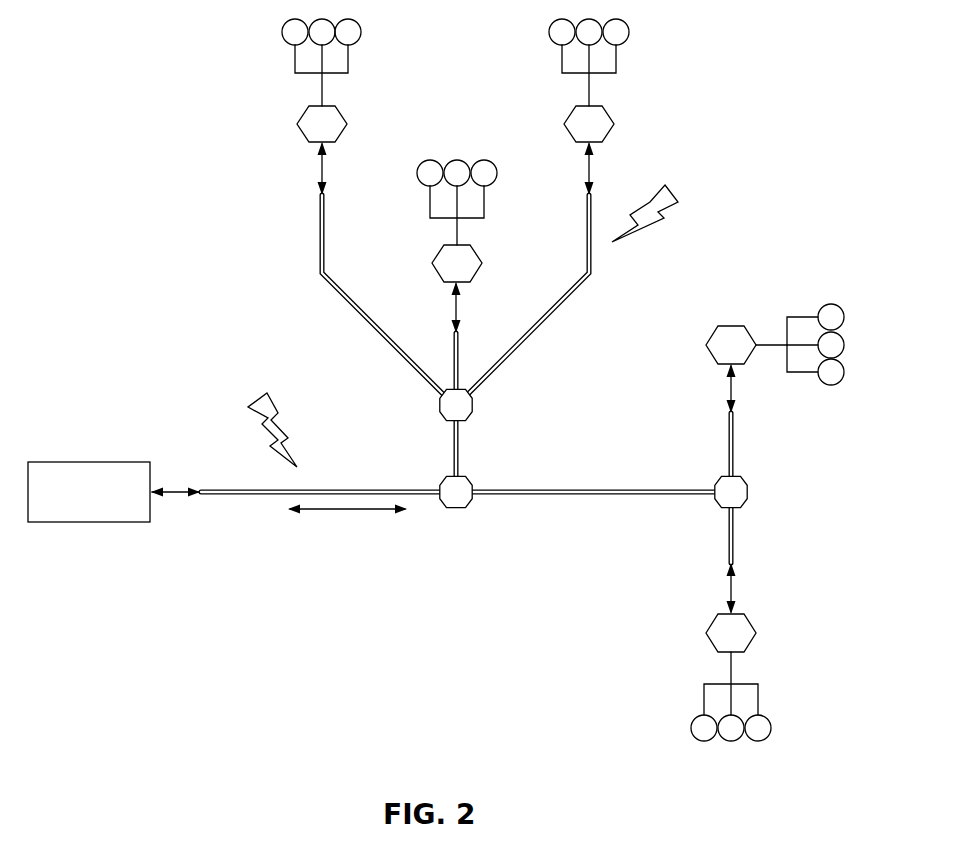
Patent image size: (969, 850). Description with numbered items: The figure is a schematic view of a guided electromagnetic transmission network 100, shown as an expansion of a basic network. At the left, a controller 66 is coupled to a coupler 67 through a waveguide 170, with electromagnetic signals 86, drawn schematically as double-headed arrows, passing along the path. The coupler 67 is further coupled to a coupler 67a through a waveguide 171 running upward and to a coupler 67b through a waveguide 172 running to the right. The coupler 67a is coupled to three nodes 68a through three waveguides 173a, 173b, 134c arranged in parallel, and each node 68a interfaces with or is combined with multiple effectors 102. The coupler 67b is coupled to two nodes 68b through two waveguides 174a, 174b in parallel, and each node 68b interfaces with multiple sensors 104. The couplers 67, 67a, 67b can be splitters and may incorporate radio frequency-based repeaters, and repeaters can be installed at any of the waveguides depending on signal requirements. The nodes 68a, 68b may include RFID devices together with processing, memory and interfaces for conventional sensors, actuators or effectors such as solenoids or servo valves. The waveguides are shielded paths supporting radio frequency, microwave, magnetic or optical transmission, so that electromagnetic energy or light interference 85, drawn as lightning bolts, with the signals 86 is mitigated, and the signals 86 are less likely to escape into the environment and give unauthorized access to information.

The guided electromagnetic transmission network 100 is at (170, 35).
The effectors 102 is at (352, 32).
The sensors 104 is at (830, 305).
The controller 66 is at (103, 503).
The coupler 67 is at (455, 508).
The coupler 67a is at (470, 415).
The coupler 67b is at (750, 493).
The nodes 68a is at (340, 115).
The nodes 68b is at (732, 326).
The electromagnetic energy or light interference 85 is at (260, 402).
The electromagnetic signals 86 is at (348, 513).
The waveguide 170 is at (237, 497).
The waveguide 171 is at (452, 453).
The waveguide 172 is at (585, 497).
The waveguide 173a is at (319, 233).
The waveguide 173b is at (448, 360).
The waveguide 174a is at (727, 432).
The waveguide 174b is at (727, 533).
The communication link 134c is at (517, 353).